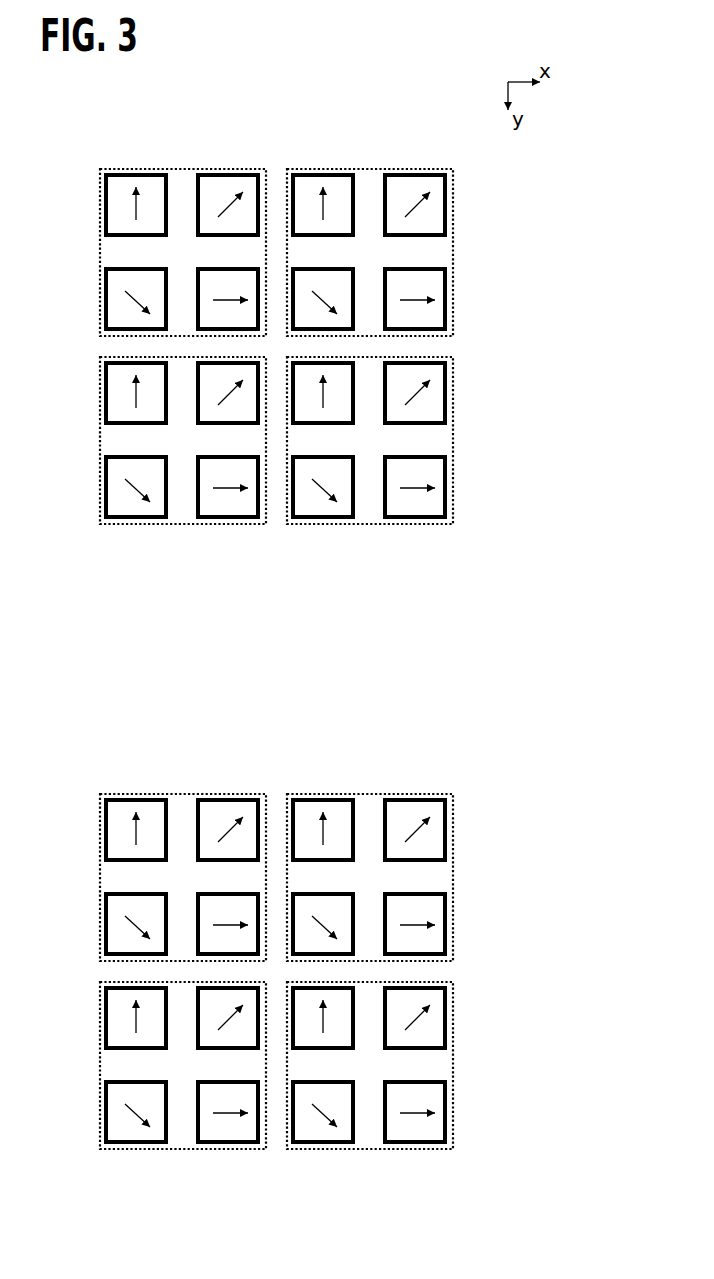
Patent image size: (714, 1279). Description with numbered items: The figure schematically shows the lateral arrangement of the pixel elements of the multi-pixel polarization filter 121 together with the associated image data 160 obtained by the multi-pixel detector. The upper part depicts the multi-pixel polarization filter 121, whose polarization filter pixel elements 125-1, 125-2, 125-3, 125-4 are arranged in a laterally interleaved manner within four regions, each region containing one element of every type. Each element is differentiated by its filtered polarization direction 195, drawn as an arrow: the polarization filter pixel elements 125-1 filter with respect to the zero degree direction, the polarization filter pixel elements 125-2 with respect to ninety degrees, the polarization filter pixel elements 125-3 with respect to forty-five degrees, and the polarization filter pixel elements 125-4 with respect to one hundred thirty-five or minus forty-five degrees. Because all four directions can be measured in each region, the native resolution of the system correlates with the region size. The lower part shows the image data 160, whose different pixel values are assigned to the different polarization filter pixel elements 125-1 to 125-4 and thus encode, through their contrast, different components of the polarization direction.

The multi-pixel polarization filter 121 is at (522, 184).
The polarization filter pixel element 125-1 is at (403, 519).
The polarization filter pixel element 125-2 is at (160, 181).
The polarization filter pixel element 125-3 is at (252, 182).
The polarization filter pixel element 125-4 is at (301, 519).
The image data 160 is at (522, 799).
The filtered polarization direction 195 is at (135, 205).